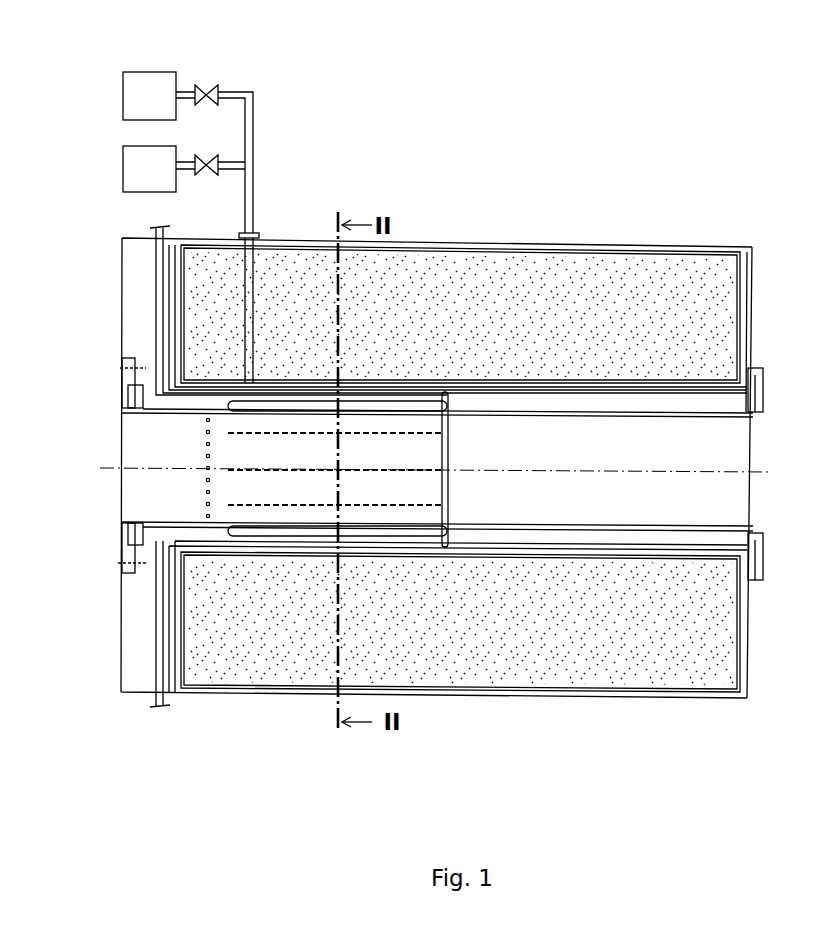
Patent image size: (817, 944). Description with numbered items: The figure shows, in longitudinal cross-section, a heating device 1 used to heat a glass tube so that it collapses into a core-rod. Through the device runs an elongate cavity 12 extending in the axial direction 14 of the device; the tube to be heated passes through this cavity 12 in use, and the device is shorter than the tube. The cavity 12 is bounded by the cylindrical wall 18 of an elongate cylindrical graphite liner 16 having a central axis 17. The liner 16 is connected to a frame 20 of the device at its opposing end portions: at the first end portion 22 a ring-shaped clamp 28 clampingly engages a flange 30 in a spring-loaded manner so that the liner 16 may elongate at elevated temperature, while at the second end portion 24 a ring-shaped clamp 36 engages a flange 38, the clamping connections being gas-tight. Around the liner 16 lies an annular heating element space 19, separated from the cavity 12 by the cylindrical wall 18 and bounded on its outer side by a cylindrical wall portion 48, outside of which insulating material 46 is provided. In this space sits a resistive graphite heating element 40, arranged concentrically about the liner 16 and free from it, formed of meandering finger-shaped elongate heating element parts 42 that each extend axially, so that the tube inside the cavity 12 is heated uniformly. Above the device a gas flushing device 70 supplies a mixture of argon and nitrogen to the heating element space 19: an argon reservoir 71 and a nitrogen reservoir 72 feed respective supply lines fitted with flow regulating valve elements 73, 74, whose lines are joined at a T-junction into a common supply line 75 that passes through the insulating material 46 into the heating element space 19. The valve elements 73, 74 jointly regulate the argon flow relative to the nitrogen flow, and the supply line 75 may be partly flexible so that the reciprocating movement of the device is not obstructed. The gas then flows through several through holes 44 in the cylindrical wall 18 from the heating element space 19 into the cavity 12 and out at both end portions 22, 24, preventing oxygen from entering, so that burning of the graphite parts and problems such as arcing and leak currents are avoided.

The heating device 1 is at (687, 172).
The elongate cavity 12 is at (118, 446).
The axial direction 14 is at (430, 727).
The cylindrical liner 16 is at (639, 410).
The central axis 17 is at (768, 474).
The cylindrical wall 18 is at (567, 418).
The heating element space 19 is at (528, 538).
The frame 20 is at (122, 333).
The first end portion 22 is at (742, 514).
The second end portion 24 is at (130, 522).
The ring-shaped clamp 28 is at (766, 378).
The flange 30 is at (755, 410).
The ring-shaped clamp 36 is at (127, 368).
The flange 38 is at (128, 398).
The heating element 40 is at (450, 437).
The elongate heating element parts 42 is at (322, 401).
The through holes 44 is at (205, 432).
The insulating material 46 is at (470, 322).
The cylindrical wall portion 48 is at (503, 384).
The gas flushing device 70 is at (283, 120).
The argon reservoir 71 is at (130, 87).
The nitrogen reservoir 72 is at (130, 168).
The valve element 73 is at (210, 82).
The valve element 74 is at (208, 180).
The common supply line 75 is at (253, 190).